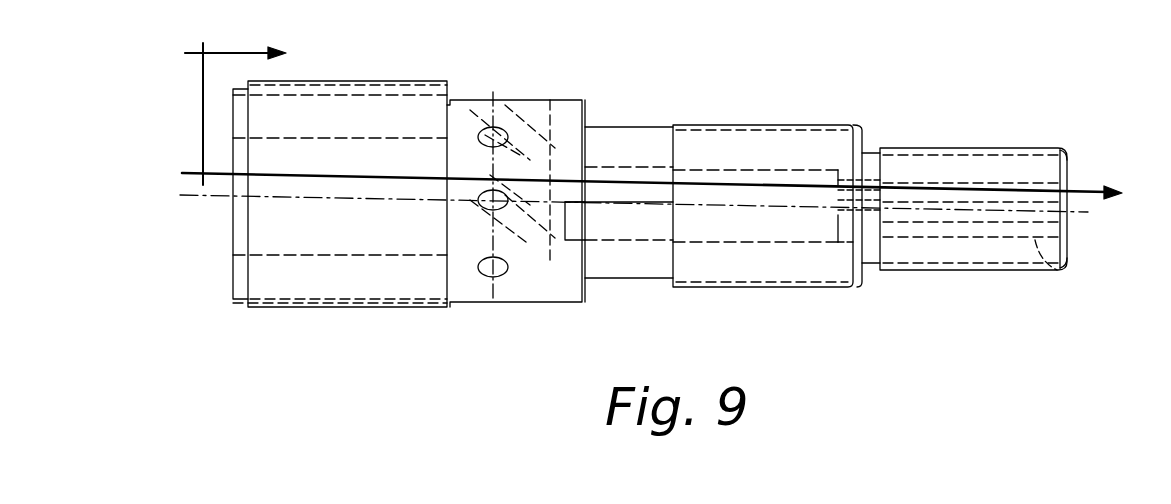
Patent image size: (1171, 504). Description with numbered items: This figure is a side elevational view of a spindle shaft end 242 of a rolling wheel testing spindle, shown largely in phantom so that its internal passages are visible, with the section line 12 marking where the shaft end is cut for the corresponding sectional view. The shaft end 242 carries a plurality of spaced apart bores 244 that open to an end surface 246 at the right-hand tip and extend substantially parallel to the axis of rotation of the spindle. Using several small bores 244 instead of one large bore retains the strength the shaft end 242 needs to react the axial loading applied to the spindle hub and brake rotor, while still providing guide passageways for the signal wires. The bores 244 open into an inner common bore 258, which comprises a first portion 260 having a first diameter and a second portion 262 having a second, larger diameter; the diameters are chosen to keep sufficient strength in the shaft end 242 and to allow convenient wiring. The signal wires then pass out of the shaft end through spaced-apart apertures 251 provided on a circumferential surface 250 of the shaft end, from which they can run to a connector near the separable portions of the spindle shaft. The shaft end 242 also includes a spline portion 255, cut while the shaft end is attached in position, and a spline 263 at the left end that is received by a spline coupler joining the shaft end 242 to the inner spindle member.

The section line 12- 12 is at (218, 99).
The spindle shaft end 242 is at (1068, 115).
The spaced apart bores 244 is at (1058, 275).
The end surface 246 is at (1067, 252).
The circumferential surface 250 is at (555, 100).
The apertures 251 is at (487, 208).
The spline portion 255 is at (778, 287).
The inner common bore 258 is at (618, 160).
The first portion 260 is at (750, 140).
The second portion 262 is at (366, 138).
The spline 263 is at (330, 308).